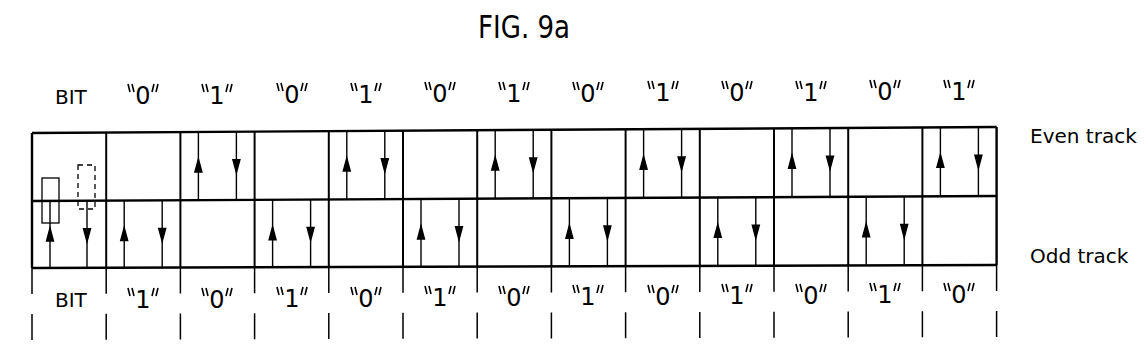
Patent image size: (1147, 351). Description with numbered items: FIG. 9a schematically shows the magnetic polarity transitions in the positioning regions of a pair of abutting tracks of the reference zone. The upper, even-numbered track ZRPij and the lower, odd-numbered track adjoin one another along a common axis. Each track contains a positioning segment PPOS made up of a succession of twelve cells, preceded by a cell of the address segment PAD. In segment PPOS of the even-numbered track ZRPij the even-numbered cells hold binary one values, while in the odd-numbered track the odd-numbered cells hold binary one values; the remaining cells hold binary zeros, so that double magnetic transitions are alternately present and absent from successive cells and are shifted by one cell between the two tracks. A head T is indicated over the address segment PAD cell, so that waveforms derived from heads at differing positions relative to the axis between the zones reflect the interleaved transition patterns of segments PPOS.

The even-numbered reference zone track ZRPij is at (985, 124).
The positioning segment PPOS is at (998, 152).
The transducer head T is at (78, 170).
The address segment PAD is at (11, 151).